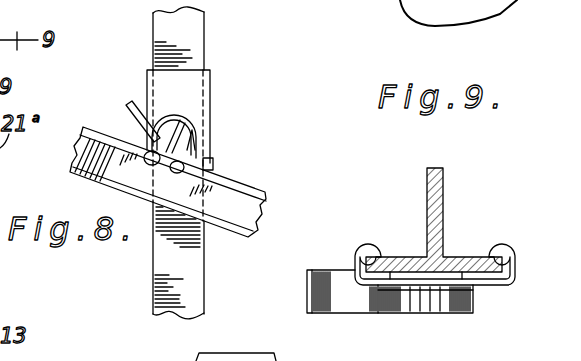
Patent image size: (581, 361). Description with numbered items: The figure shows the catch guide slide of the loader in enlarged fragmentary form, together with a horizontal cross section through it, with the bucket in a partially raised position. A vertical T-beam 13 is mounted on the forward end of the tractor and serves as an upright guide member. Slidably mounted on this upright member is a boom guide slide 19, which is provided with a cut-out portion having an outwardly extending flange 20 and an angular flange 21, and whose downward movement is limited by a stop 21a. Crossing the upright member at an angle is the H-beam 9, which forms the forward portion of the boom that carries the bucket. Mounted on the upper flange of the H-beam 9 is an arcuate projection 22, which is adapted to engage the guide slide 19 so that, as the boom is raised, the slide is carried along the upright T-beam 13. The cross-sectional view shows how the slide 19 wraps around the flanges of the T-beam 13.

In FIG. 8, the H-beam 9 is at (245, 192).
In FIG. 8, the vertical T-beam 13 is at (190, 35).
In FIG. 9, the vertical T-beam 13 is at (444, 197).
In FIG. 8, the boom guide slide 19 is at (188, 91).
In FIG. 9, the boom guide slide 19 is at (473, 305).
In FIG. 8, the outwardly extending flange 20 is at (193, 117).
In FIG. 9, the outwardly extending flange 20 is at (407, 305).
In FIG. 8, the angular flange 21 is at (133, 116).
In FIG. 9, the angular flange 21 is at (307, 293).
In FIG. 8, the stop 21a is at (215, 163).
In FIG. 8, the arcuate projection 22 is at (187, 133).